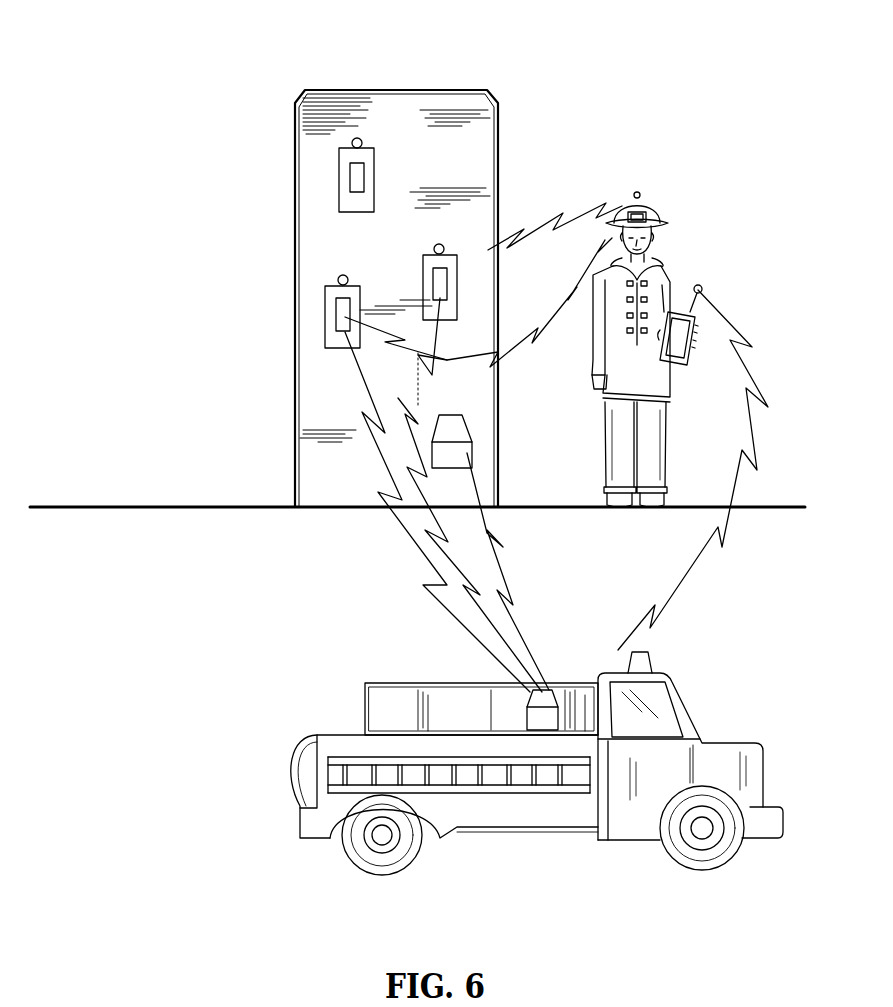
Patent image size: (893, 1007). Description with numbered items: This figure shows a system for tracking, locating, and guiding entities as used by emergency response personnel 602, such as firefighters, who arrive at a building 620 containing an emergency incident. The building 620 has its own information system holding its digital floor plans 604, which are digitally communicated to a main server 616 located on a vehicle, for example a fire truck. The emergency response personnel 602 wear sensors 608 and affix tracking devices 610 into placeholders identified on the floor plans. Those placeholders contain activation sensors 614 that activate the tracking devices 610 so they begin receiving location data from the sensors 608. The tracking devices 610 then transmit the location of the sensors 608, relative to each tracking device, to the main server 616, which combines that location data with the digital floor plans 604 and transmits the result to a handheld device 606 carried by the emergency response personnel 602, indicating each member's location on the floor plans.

The emergency response personnel 602 is at (647, 355).
The digital floor plans 604 is at (475, 437).
The handheld portable device 606 is at (686, 310).
The sensors 608 is at (641, 192).
The tracking devices 610 is at (430, 278).
The activation sensors 614 is at (354, 270).
The main server 616 is at (543, 735).
The building 620 is at (499, 96).